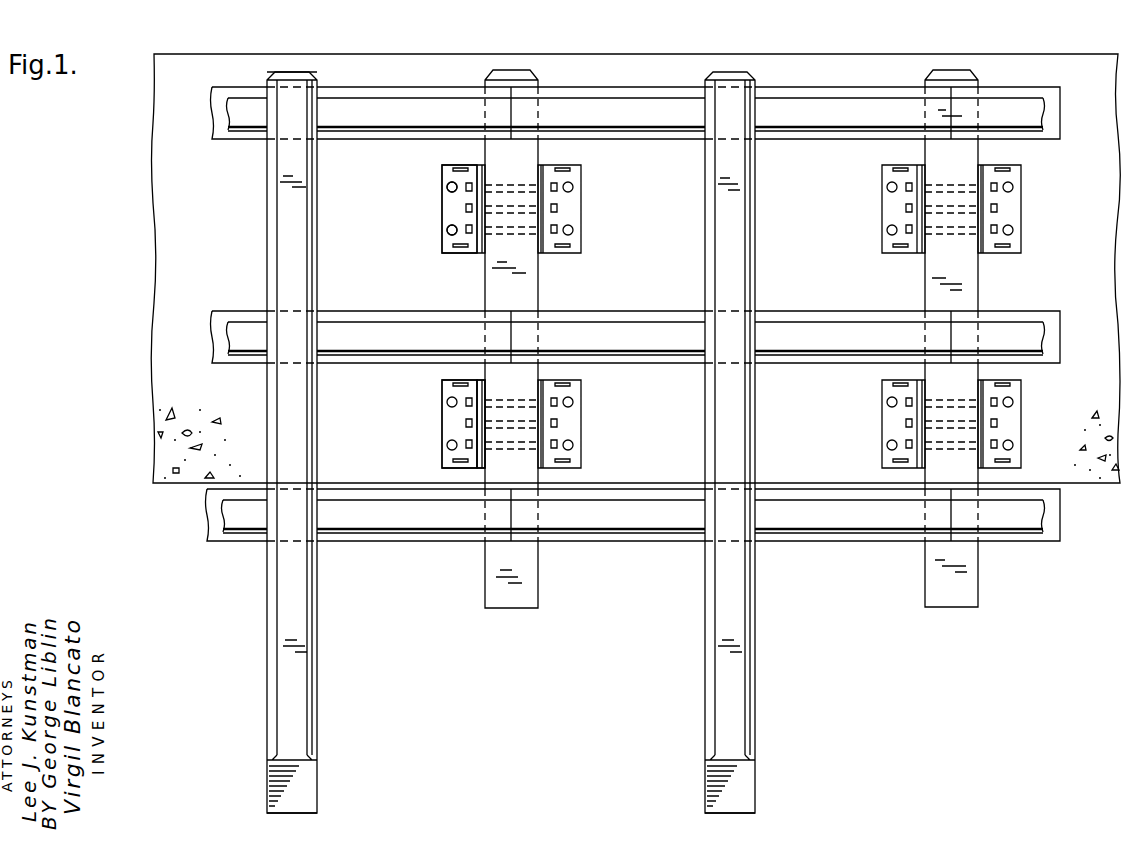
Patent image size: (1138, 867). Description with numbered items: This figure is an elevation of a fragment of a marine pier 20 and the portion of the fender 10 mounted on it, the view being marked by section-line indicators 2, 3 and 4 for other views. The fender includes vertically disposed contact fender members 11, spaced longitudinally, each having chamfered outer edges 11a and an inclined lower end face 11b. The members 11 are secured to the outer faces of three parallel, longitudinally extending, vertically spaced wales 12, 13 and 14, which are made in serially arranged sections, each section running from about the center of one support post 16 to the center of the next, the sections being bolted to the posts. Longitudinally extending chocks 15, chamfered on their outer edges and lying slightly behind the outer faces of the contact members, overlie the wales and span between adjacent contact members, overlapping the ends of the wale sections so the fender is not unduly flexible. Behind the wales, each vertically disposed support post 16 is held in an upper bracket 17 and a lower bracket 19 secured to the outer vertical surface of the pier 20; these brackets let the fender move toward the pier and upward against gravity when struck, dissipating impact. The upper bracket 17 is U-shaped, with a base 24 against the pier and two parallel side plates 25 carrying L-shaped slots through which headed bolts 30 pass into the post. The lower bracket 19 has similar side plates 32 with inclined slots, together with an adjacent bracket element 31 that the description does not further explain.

The fence assembly 10 is at (267, 212).
The main post 11 is at (290, 630).
The post side face 11a is at (273, 685).
The post footing 11b is at (280, 777).
The upper rail 12 is at (632, 87).
The middle rail 13 is at (371, 311).
The lower rail 14 is at (690, 541).
The rail section 15 is at (592, 105).
The intermediate post 16 is at (493, 587).
The upper splice bracket 17 is at (582, 195).
The lower splice bracket 19 is at (583, 423).
The concrete wall 20 is at (157, 430).
The bracket plate 24 is at (441, 207).
The bolt hole 25 is at (452, 230).
The bolt hole 30 is at (447, 187).
The bracket plate 31 is at (447, 433).
The bracket flange 32 is at (478, 412).
The section line 2- 2 is at (399, 40).
The section line 3- 3 is at (659, 40).
The section line 4- 4 is at (185, 120).